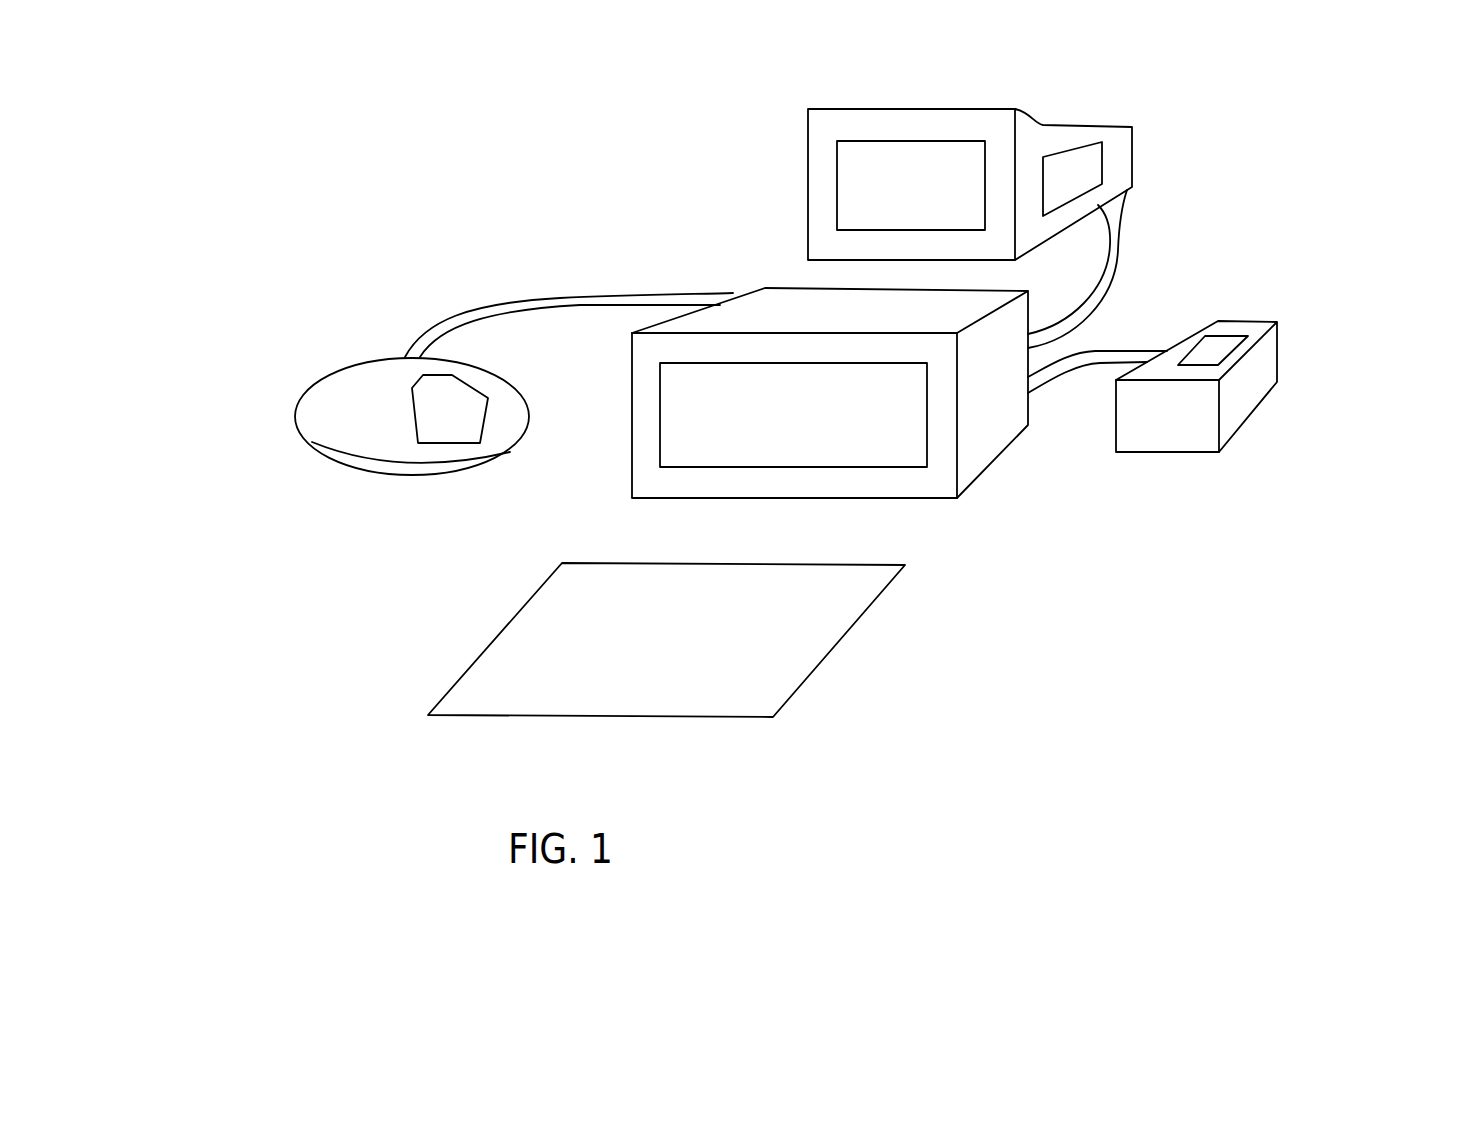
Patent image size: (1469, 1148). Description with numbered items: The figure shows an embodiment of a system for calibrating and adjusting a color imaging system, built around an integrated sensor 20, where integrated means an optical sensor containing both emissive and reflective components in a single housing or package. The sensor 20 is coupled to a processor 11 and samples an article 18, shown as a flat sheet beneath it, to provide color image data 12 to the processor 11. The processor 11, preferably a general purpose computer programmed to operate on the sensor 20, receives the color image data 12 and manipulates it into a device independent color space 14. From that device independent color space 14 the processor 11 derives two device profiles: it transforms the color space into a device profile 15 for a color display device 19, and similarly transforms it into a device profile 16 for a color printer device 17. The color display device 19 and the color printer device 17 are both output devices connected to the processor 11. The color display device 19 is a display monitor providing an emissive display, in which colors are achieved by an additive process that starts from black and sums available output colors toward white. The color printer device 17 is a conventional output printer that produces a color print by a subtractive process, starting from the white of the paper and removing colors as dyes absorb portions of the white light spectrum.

The processor 11 is at (925, 498).
The color image data 12 is at (418, 420).
The device independent color space 14 is at (855, 445).
The device profile 15 is at (1102, 163).
The device profile 16 is at (1218, 333).
The color printer device 17 is at (1238, 425).
The article 18 is at (500, 631).
The color display device 19 is at (808, 183).
The integrated sensor 20 is at (297, 418).